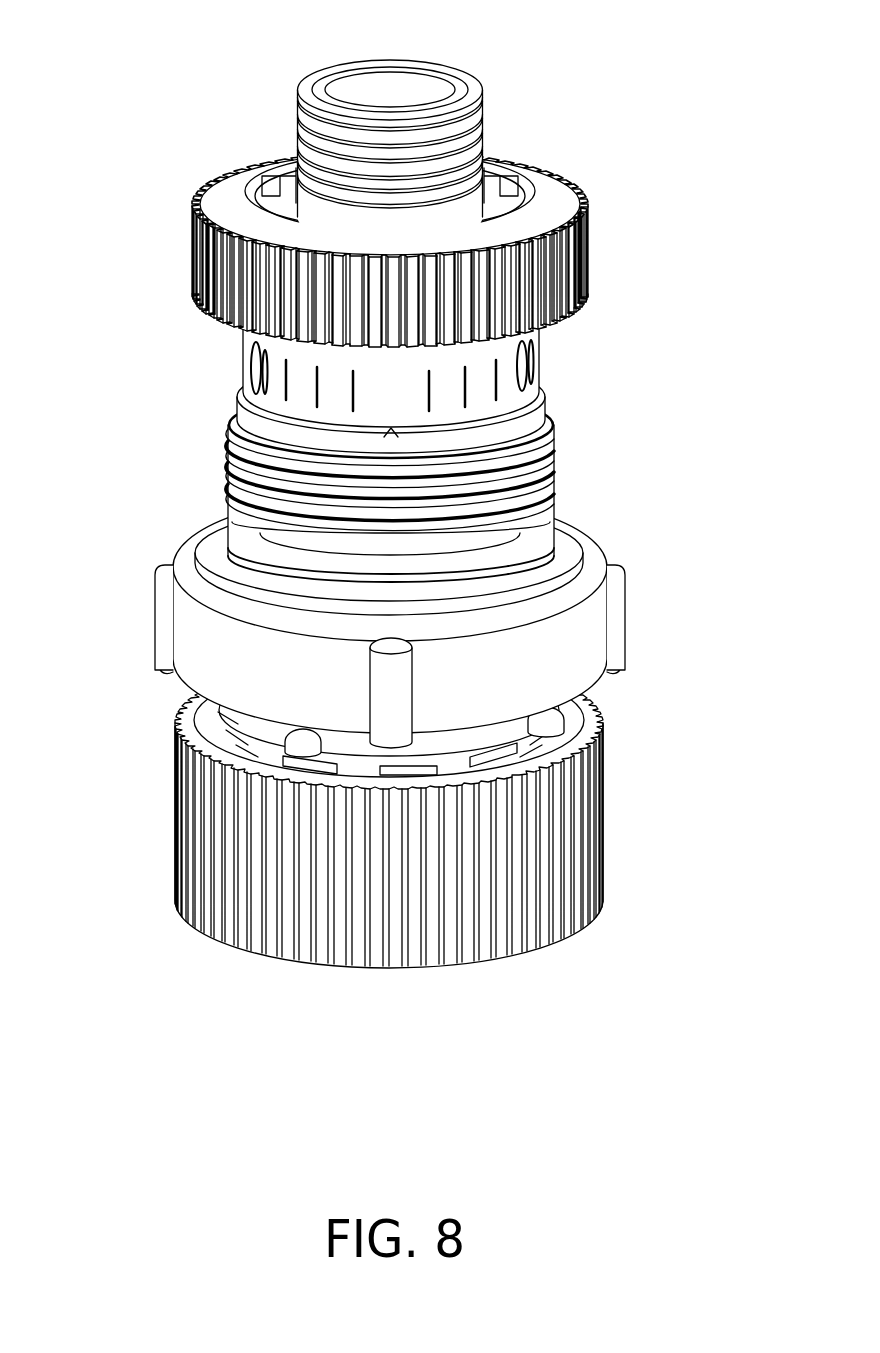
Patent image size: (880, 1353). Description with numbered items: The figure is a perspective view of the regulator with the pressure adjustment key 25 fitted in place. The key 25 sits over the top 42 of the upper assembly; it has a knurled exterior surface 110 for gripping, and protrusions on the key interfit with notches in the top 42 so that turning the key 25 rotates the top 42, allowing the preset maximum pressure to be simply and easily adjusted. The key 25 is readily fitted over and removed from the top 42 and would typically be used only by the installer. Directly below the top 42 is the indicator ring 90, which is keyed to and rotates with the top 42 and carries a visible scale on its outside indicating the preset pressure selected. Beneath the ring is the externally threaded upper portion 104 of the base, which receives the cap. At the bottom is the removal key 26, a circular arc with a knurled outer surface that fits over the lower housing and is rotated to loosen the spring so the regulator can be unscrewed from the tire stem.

The key 25 is at (600, 157).
The removal key 26 is at (190, 943).
The top 42 is at (500, 56).
The indicator ring 90 is at (250, 358).
The upper portion 104 is at (233, 460).
The knurled exterior surface 110 is at (205, 263).